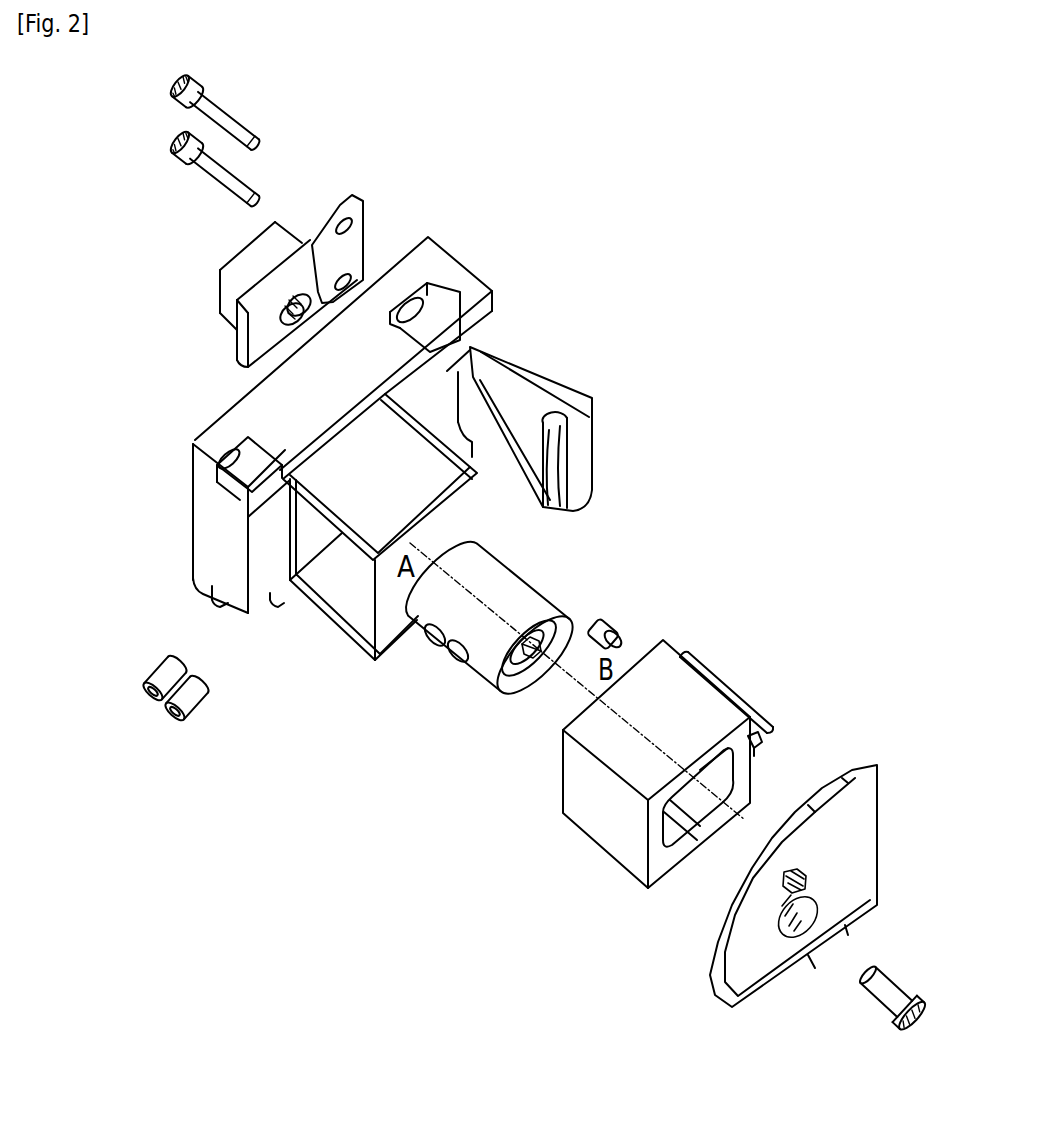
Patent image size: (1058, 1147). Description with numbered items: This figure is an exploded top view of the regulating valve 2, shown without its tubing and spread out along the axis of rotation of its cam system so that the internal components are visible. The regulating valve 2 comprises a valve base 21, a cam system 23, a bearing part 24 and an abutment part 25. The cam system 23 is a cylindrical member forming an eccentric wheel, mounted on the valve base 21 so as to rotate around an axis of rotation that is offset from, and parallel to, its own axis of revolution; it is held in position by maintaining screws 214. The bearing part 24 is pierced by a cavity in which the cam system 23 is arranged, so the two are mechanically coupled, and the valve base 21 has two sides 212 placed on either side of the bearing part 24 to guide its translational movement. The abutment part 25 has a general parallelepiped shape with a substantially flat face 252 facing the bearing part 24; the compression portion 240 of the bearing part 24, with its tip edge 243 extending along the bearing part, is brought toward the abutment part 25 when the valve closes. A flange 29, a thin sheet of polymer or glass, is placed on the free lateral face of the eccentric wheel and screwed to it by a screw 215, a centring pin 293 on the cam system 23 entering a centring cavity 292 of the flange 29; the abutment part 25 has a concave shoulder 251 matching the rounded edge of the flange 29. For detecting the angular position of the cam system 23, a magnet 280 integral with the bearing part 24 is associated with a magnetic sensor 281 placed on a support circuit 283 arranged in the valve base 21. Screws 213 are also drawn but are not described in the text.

The regulating valve 2 is at (824, 212).
The valve base 21 is at (210, 555).
The sides 212 is at (288, 477).
The screws 213 is at (197, 183).
The maintaining screws 214 is at (147, 710).
The screw 215 is at (877, 1000).
The cam system 23 is at (490, 673).
The bearing part 24 is at (620, 850).
The compression portion 240 is at (774, 733).
The tip edge 243 is at (731, 700).
The abutment part 25 is at (532, 362).
The shoulder 251 is at (558, 444).
The flat face 252 is at (545, 452).
The magnet 280 is at (607, 617).
The magnetic sensor 281 is at (309, 283).
The support circuit 283 is at (258, 330).
The flange 29 is at (718, 955).
The centring cavity 292 is at (785, 884).
The centring pin 293 is at (530, 640).